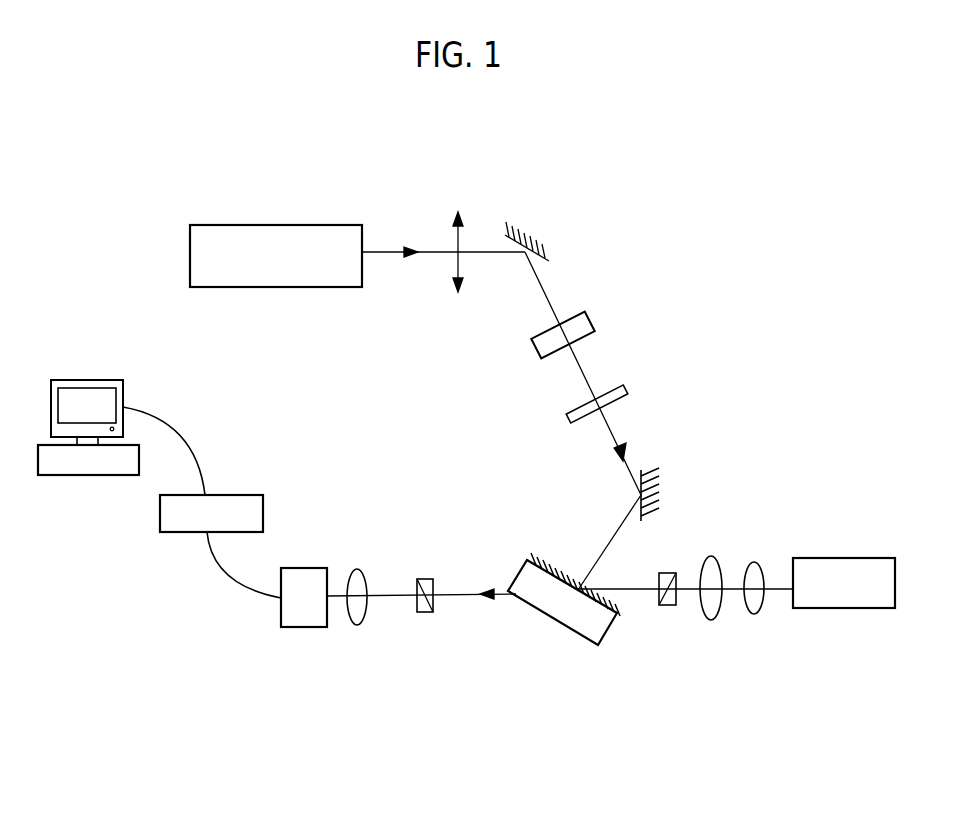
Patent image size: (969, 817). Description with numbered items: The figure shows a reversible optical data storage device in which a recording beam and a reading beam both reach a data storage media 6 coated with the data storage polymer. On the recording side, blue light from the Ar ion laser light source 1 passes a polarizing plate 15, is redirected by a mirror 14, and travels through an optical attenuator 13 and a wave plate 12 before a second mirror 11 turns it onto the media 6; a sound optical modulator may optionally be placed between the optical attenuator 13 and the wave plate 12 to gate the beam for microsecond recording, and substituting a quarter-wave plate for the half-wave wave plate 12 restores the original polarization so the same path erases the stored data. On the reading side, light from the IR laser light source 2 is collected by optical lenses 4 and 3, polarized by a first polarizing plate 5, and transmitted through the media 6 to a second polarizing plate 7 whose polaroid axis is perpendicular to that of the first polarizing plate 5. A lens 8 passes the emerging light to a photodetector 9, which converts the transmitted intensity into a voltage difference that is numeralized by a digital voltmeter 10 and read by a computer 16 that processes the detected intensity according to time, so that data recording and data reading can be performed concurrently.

The Ar ion laser light source 1 is at (283, 228).
The IR laser light source 2 is at (847, 608).
The optical lens 3 is at (711, 620).
The optical lens 4 is at (754, 614).
The first polarizing plate 5 is at (667, 605).
The data storage media 6 is at (560, 628).
The second polarizing plate 7 is at (425, 612).
The lens 8 is at (357, 625).
The detector 9 is at (298, 627).
The digital voltmeter 10 is at (263, 510).
The mirror 11 is at (652, 470).
The wave plate 12 is at (628, 392).
The optical attenuator 13 is at (598, 320).
The mirror 14 is at (542, 240).
The polarizing plate 15 is at (455, 222).
The computer 16 is at (90, 380).